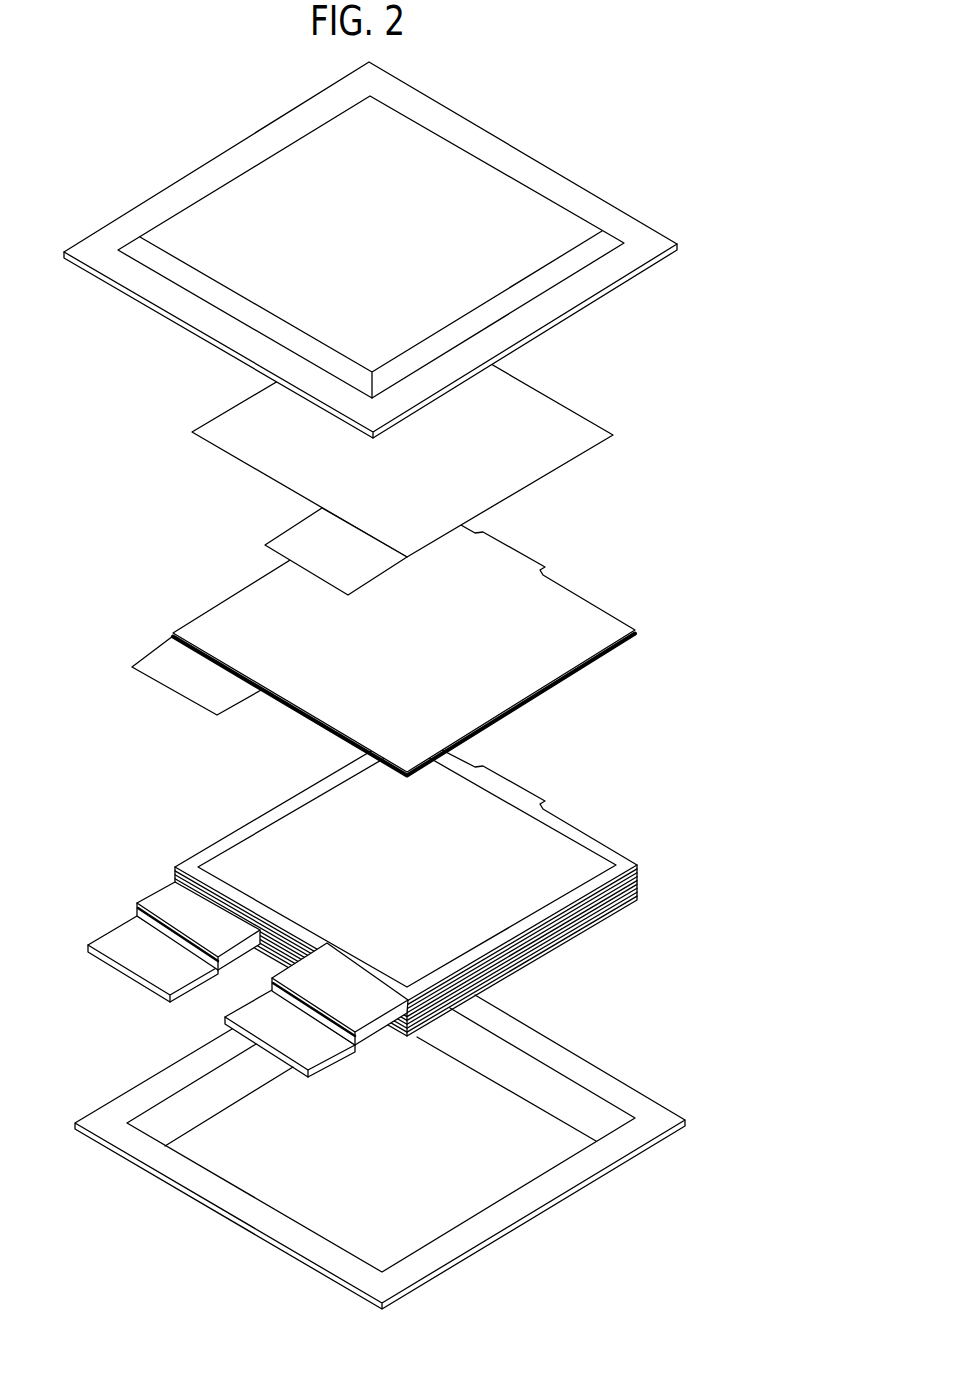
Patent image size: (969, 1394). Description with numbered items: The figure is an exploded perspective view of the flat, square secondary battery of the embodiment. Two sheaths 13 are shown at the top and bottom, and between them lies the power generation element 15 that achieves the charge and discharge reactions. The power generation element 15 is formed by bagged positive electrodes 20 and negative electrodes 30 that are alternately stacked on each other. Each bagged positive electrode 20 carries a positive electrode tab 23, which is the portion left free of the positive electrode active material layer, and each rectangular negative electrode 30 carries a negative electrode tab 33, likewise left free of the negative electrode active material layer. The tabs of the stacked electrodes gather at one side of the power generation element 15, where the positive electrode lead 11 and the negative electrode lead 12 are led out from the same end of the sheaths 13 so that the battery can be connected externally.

The positive electrode lead 11 is at (120, 937).
The negative electrode lead 12 is at (267, 1023).
The sheaths 13 is at (98, 242).
The power generation element 15 is at (200, 832).
The bagged positive electrode 20 is at (203, 625).
The positive electrode tab 23 is at (167, 895).
The negative electrode 30 is at (580, 422).
The negative electrode tab 33 is at (298, 552).